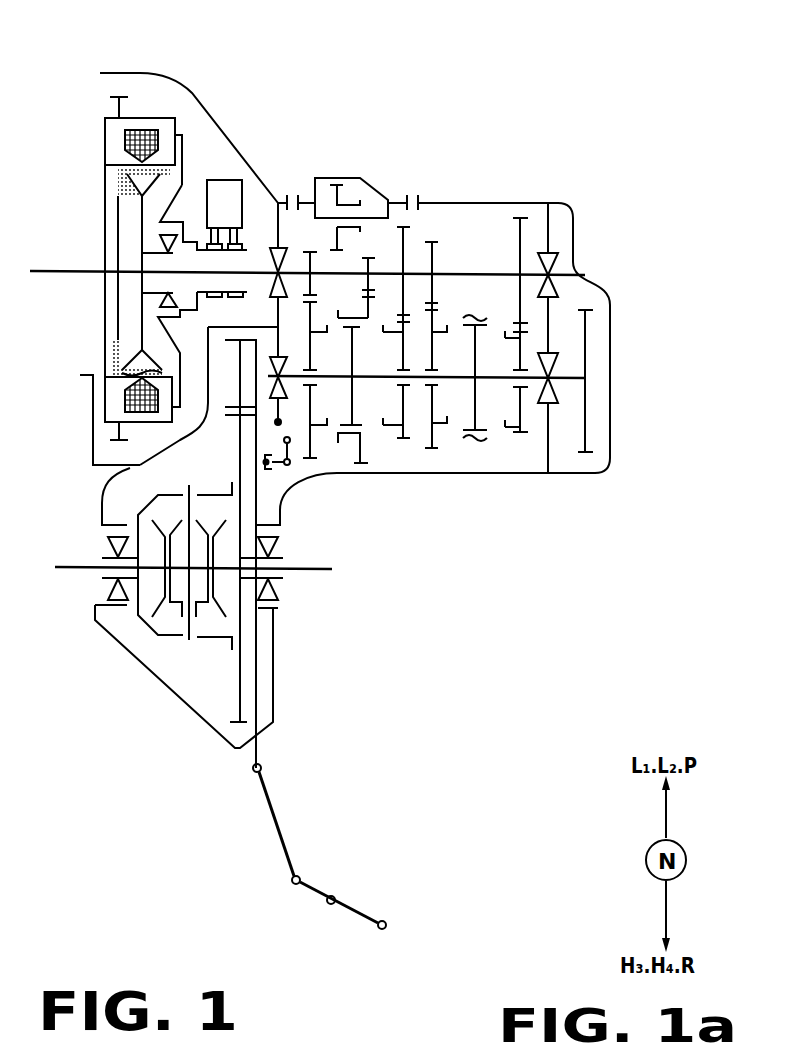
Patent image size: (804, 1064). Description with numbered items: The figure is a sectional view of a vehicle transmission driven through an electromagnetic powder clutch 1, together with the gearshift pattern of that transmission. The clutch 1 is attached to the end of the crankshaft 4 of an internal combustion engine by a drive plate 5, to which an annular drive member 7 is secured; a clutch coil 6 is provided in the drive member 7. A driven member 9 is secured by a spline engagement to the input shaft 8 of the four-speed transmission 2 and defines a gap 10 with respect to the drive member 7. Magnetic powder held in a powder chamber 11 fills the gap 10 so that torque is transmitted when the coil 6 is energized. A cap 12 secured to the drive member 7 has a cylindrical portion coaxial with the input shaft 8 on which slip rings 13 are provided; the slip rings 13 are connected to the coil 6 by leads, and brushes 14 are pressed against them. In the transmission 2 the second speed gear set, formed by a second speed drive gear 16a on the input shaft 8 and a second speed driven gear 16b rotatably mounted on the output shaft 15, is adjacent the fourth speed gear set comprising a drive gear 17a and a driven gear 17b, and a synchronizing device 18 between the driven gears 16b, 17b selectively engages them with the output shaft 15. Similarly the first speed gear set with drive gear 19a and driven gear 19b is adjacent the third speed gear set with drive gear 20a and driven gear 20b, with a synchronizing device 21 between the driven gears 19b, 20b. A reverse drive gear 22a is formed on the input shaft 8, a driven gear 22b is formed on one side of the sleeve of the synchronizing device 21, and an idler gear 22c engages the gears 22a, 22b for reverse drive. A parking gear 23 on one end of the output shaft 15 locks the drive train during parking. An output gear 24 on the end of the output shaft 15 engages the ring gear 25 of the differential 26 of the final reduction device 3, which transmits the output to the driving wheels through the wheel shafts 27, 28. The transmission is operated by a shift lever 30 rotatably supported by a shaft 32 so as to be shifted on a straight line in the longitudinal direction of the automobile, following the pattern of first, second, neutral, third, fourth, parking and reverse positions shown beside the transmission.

The electromagnetic powder clutch 1 is at (151, 90).
The four-speed transmission 2 is at (506, 194).
The final reduction device 3 is at (199, 672).
The crankshaft 4 is at (63, 272).
The drive plate 5 is at (103, 218).
The clutch coil 6 is at (123, 147).
The drive member 7 is at (113, 127).
The input shaft 8 is at (478, 275).
The driven member 9 is at (160, 188).
The gap 10 is at (182, 133).
The powder chamber 11 is at (115, 188).
The cap 12 is at (183, 186).
The slip rings 13 is at (244, 242).
The brushes 14 is at (266, 178).
The output shaft 15 is at (500, 377).
The second speed drive gear 16a is at (428, 240).
The second speed driven gear 16b is at (433, 450).
The fourth speed drive gear 17a is at (523, 217).
The fourth speed driven gear 17b is at (522, 435).
The synchronizing device 18 is at (473, 447).
The first speed drive gear 19a is at (310, 247).
The first speed driven gear 19b is at (303, 467).
The third speed drive gear 20a is at (405, 225).
The third speed driven gear 20b is at (405, 440).
The synchronizing device 21 is at (347, 448).
The reverse drive gear 22a is at (367, 257).
The reverse driven gear 22b is at (367, 467).
The idler gear 22c is at (340, 183).
The parking gear 23 is at (587, 455).
The output gear 24 is at (248, 327).
The ring gear 25 is at (237, 749).
The differential 26 is at (160, 650).
The wheel shaft 27 is at (62, 570).
The wheel shaft 28 is at (312, 570).
The shift lever 30 is at (363, 913).
The shaft 32 is at (297, 873).